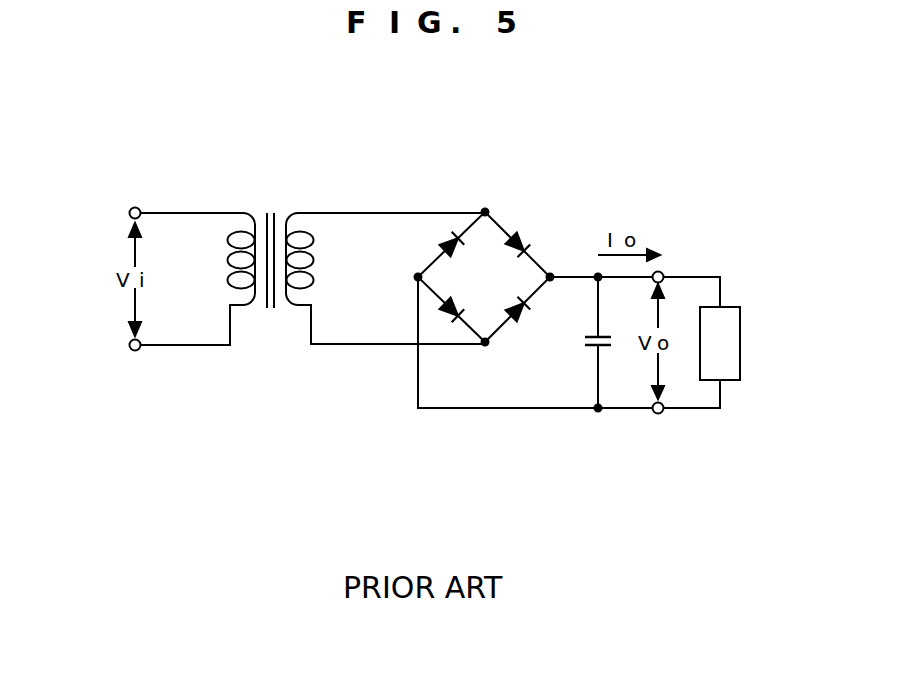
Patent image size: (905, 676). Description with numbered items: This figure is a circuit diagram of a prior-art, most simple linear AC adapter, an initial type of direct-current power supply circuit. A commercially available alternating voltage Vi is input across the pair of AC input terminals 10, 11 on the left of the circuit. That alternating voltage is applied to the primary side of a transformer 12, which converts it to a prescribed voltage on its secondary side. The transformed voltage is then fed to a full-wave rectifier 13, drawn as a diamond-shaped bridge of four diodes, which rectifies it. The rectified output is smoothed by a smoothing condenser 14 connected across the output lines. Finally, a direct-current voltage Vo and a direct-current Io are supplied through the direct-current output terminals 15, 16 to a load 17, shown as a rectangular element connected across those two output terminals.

The AC input terminal 10 is at (129, 213).
The AC input terminal 11 is at (129, 345).
The transformer 12 is at (273, 202).
The full-wave rectifier 13 is at (488, 236).
The smoothing condenser 14 is at (585, 340).
The direct-current output terminal 15 is at (663, 272).
The direct-current output terminal 16 is at (663, 413).
The load 17 is at (728, 343).